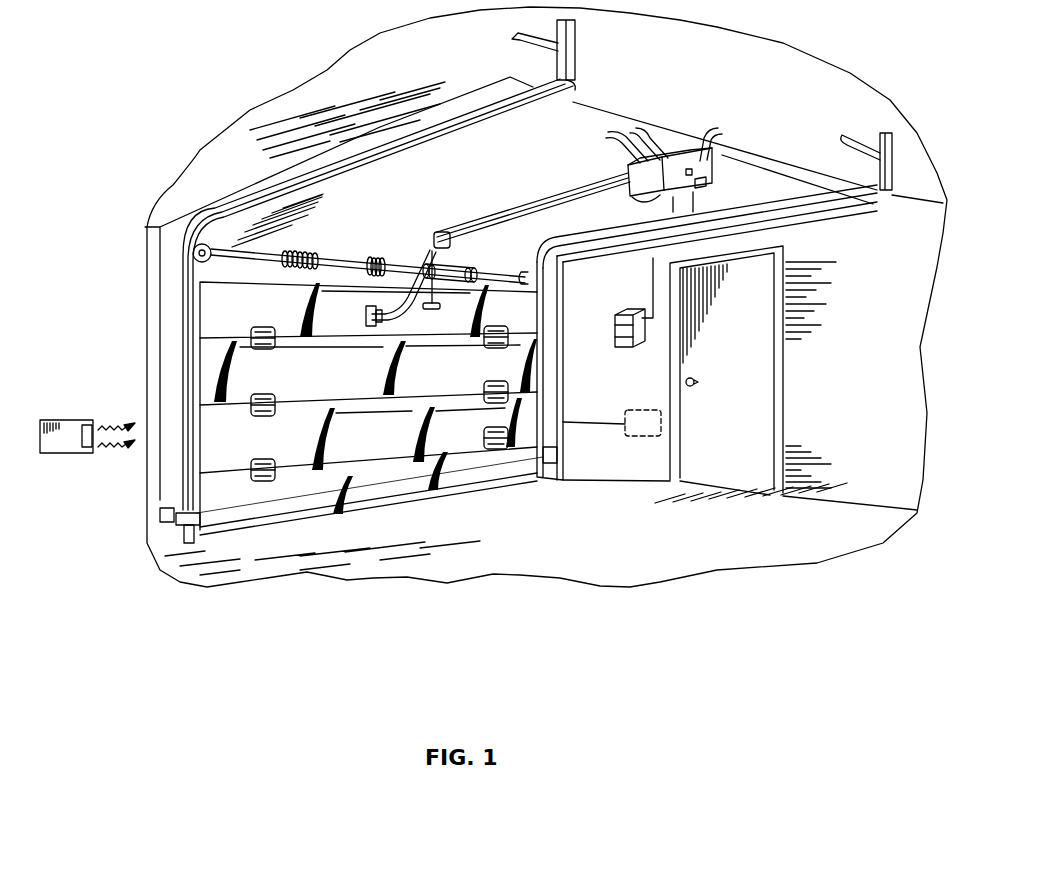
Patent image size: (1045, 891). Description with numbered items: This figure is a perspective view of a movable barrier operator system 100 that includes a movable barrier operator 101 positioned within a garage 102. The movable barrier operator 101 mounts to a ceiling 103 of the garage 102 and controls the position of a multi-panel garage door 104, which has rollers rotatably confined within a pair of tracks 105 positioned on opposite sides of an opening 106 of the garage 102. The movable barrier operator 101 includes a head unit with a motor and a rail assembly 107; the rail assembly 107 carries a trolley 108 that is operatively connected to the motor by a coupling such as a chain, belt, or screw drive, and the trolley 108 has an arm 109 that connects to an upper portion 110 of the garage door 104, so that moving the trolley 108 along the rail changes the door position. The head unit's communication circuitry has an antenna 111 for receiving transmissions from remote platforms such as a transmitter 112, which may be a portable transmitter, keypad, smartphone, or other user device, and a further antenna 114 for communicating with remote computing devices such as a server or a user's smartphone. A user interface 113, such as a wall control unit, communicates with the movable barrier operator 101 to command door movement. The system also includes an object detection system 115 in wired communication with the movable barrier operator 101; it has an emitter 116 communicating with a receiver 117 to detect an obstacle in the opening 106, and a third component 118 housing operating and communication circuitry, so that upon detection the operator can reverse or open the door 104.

The movable barrier operator system 100 is at (233, 75).
The movable barrier operator 101 is at (603, 187).
The garage 102 is at (150, 252).
The ceiling 103 is at (777, 87).
The multi-panel garage door 104 is at (407, 477).
The tracks 105 is at (543, 417).
The opening 106 is at (507, 460).
The rail assembly 107 is at (490, 217).
The trolley 108 is at (452, 246).
The arm 109 is at (410, 313).
The upper portion 110 is at (335, 330).
The antenna 111 is at (700, 207).
The transmitter 112 is at (68, 447).
The user interface 113 is at (642, 347).
The antenna 114 is at (673, 200).
The object detection system 115 is at (167, 532).
The emitter 116 is at (207, 527).
The receiver 117 is at (557, 462).
The third component 118 is at (640, 427).